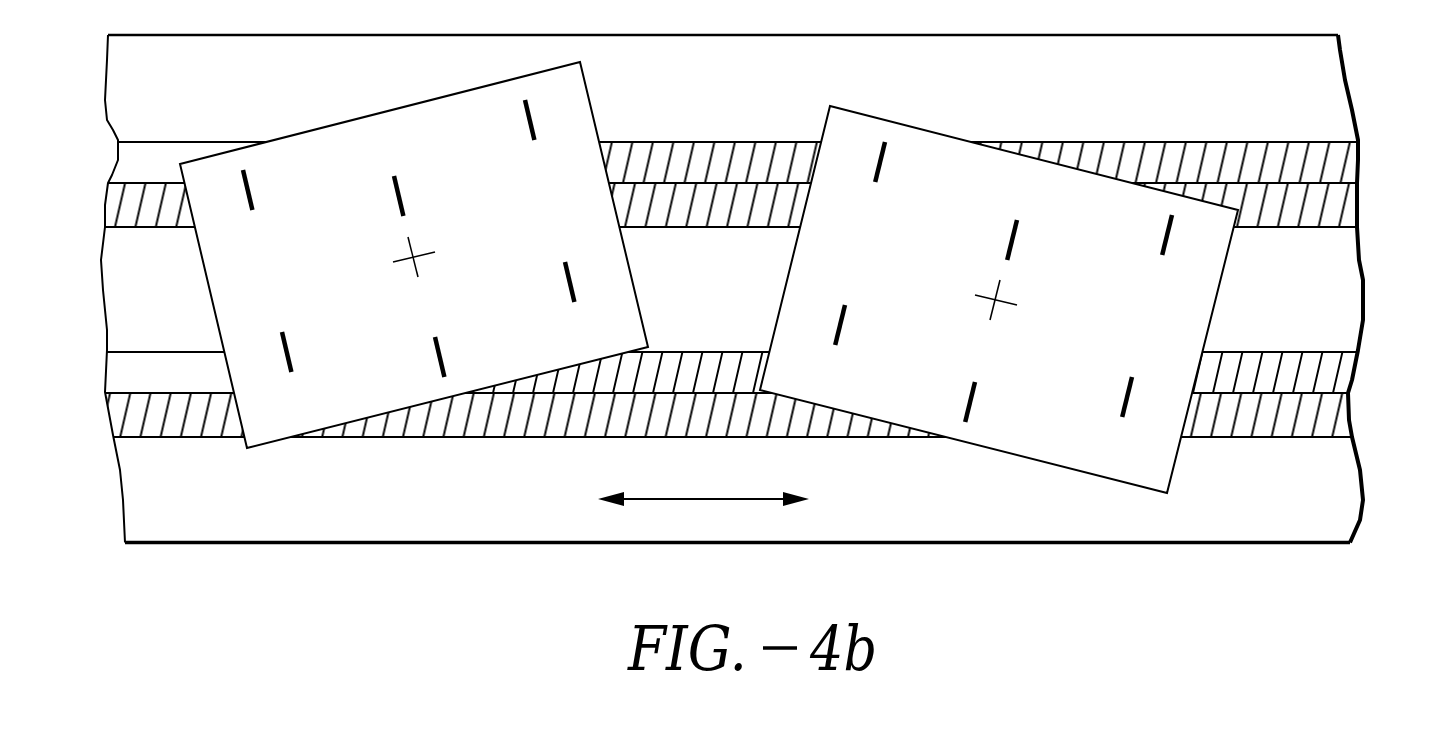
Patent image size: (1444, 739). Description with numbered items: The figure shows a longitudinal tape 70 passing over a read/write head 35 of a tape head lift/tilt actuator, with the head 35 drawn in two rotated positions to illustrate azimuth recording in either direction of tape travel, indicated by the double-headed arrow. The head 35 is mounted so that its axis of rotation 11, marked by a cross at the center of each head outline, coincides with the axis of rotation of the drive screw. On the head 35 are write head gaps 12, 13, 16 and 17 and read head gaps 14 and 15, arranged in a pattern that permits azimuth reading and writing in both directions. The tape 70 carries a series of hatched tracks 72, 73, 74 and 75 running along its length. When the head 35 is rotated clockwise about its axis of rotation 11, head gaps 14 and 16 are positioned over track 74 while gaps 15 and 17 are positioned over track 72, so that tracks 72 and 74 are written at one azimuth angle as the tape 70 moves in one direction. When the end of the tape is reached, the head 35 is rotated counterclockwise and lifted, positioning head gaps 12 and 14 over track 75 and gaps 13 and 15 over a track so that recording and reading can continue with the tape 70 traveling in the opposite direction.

The axis of rotation 11 is at (398, 274).
The write head gap 12 is at (250, 190).
The write head gap 13 is at (289, 350).
The read head gap 14 is at (401, 189).
The read head gap 15 is at (442, 352).
The write head gap 16 is at (529, 122).
The write head gap 17 is at (570, 284).
The read/write head 35 is at (262, 446).
The longitudinal tape 70 is at (760, 320).
The track 72 is at (1330, 418).
The conductive line 73 is at (1340, 372).
The track 74 is at (1338, 206).
The track 75 is at (1345, 163).